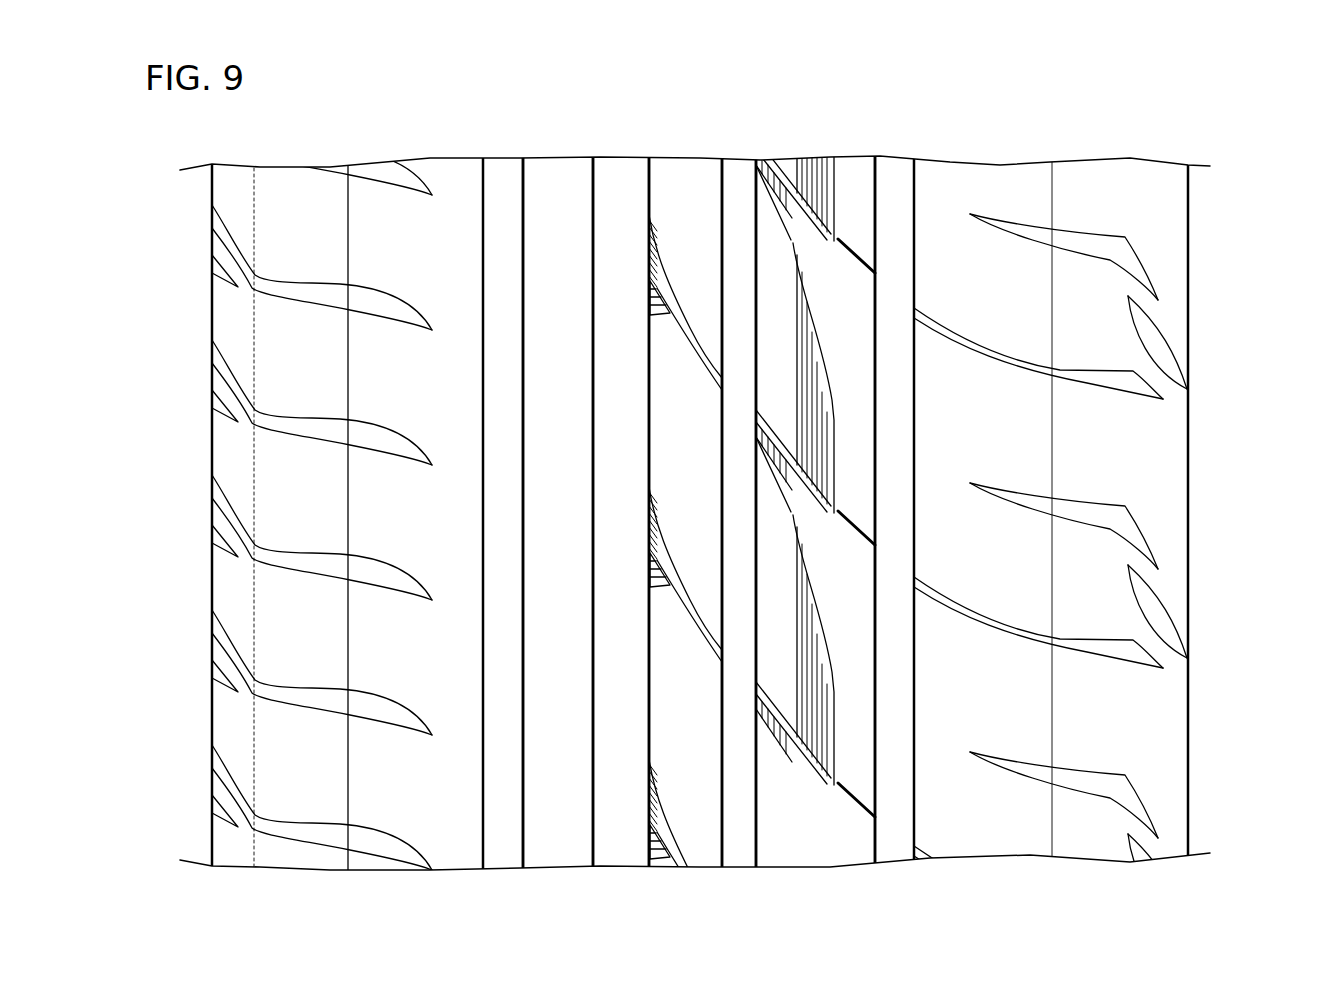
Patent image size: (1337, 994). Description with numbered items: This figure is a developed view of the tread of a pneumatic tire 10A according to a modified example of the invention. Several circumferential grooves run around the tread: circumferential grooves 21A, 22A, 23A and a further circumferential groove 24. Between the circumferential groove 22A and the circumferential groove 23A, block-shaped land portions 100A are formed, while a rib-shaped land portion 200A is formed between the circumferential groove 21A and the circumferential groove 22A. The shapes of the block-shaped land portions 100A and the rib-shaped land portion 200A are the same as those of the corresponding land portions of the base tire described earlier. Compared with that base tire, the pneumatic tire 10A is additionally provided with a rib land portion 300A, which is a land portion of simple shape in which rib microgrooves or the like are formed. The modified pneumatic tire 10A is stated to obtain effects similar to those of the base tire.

The pneumatic tire 10A is at (1247, 107).
The circumferential groove 24 is at (503, 172).
The rib land portion 300A is at (560, 143).
The circumferential groove 21A is at (626, 172).
The rib-shaped land portion 200A is at (685, 143).
The circumferential groove 22A is at (739, 172).
The block-shaped land portions 100A is at (825, 143).
The circumferential groove 23A is at (893, 170).